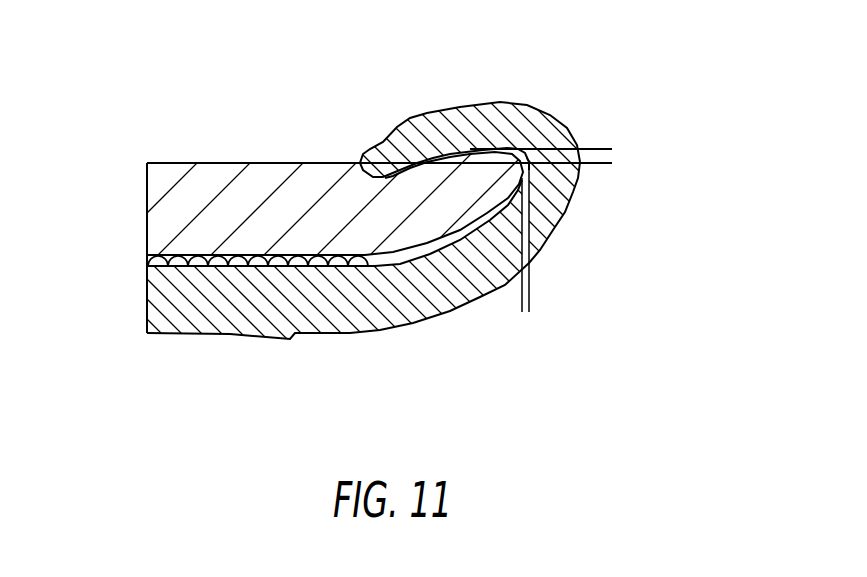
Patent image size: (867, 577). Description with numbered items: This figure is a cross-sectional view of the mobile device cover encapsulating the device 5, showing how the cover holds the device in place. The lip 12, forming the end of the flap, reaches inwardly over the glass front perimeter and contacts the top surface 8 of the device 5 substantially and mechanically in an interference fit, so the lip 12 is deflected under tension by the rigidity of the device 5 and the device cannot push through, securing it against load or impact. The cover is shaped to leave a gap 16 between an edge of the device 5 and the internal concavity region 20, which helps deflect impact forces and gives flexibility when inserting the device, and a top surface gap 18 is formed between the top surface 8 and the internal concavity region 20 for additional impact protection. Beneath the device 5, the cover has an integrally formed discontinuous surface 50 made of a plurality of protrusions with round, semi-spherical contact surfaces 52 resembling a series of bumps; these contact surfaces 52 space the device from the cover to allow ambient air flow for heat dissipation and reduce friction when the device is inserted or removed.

The device 5 is at (232, 178).
The top surface 8 is at (290, 163).
The lip 12 is at (385, 143).
The gap 16 is at (483, 306).
The top surface gap 18 is at (605, 172).
The internal concavity region 20 is at (570, 200).
The discontinuous surface 50 is at (140, 264).
The contact surfaces 52 is at (358, 254).